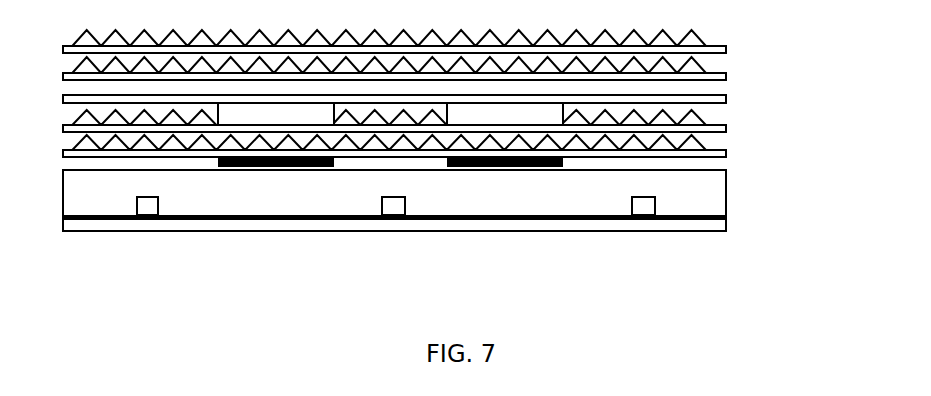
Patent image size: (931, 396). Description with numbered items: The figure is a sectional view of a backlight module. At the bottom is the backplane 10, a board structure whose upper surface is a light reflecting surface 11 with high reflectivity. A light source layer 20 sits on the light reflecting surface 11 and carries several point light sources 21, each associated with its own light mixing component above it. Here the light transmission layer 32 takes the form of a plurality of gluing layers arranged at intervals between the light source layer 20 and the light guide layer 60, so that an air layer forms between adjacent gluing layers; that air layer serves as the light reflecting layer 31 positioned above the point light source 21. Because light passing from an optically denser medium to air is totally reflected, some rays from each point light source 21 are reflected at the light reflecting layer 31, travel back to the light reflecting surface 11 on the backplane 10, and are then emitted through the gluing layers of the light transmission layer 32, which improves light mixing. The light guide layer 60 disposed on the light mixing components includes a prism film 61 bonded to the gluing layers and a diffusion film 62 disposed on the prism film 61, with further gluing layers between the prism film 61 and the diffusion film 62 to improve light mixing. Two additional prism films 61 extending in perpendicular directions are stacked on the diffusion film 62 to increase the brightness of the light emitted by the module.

The backplane 10 is at (339, 232).
The light reflecting surface 11 is at (502, 220).
The light source layer 20 is at (678, 202).
The point light source 21 is at (395, 205).
The light reflecting layer 31 is at (357, 162).
The light transmission layer 32 is at (230, 166).
The light guide layer 60 is at (817, 75).
The prism film 61 is at (727, 133).
The diffusion film 62 is at (727, 98).